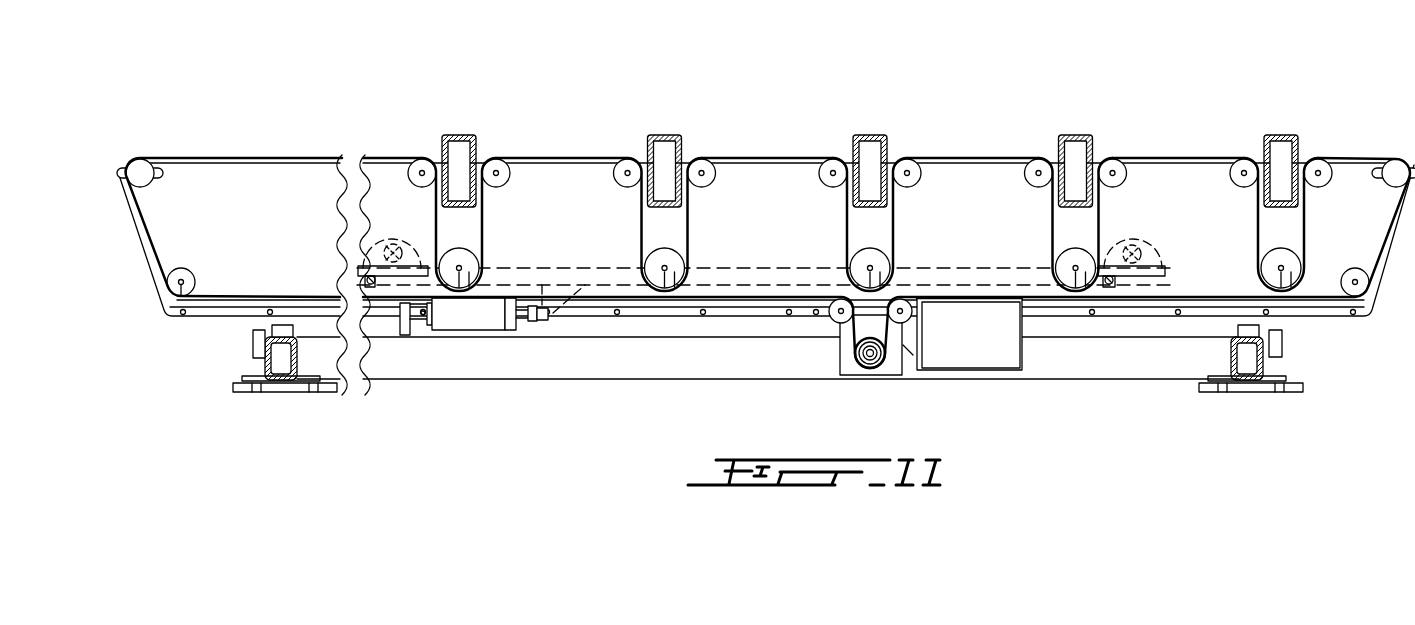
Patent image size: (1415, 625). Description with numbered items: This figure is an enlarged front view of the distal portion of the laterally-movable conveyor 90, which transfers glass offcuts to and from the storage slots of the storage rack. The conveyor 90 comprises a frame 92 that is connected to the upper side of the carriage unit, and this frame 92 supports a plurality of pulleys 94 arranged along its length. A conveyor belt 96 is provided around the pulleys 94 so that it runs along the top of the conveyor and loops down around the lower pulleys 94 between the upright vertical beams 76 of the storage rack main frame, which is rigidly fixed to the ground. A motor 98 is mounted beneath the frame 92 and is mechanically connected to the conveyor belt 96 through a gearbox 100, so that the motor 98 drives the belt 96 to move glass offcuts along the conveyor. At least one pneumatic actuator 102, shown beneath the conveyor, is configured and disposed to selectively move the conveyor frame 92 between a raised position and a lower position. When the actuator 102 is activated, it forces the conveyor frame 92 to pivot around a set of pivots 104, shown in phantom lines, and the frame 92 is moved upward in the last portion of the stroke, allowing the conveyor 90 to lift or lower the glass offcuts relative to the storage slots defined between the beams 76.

The laterally-movable conveyor 90 is at (131, 150).
The frame 92 is at (170, 228).
The pulleys 94 is at (628, 162).
The vertical beams 76 is at (663, 135).
The conveyor belt 96 is at (748, 157).
The motor 98 is at (1000, 343).
The gearbox 100 is at (890, 368).
The pneumatic actuator 102 is at (477, 320).
The pivots 104 is at (368, 265).